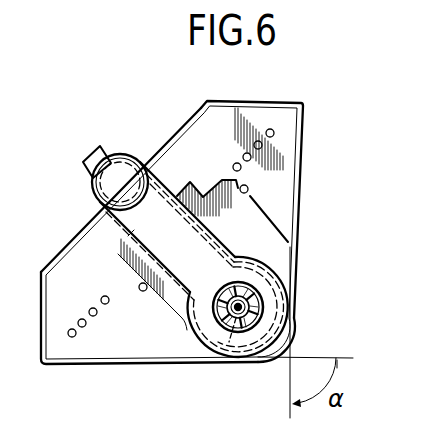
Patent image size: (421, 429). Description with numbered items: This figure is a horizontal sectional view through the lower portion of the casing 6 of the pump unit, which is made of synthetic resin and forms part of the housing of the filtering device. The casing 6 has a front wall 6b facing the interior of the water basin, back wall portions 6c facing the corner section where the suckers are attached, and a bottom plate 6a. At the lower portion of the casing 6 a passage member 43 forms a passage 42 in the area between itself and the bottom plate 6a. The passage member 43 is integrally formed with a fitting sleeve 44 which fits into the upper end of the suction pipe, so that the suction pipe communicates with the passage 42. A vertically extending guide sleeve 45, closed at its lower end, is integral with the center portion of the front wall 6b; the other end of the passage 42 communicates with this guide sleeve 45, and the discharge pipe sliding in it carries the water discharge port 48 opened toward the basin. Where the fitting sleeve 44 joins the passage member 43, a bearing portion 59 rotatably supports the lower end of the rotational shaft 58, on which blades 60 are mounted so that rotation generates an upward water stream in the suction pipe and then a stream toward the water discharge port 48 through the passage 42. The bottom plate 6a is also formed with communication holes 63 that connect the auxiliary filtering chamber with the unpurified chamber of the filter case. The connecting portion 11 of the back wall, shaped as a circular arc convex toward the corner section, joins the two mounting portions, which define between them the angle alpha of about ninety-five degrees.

The casing 6 is at (306, 207).
The bottom plate 6a is at (128, 350).
The front wall 6b is at (70, 242).
The back wall portion 6c is at (299, 237).
The connecting portion 11 is at (281, 353).
The passage 42 is at (131, 233).
The passage member 43 is at (160, 188).
The fitting sleeve 44 is at (245, 332).
The guide sleeve 45 is at (126, 154).
The water discharge port 48 is at (95, 155).
The rotational shaft 58 is at (232, 308).
The bearing portion 59 is at (235, 282).
The blades 60 is at (265, 298).
The communication holes 63 is at (263, 144).